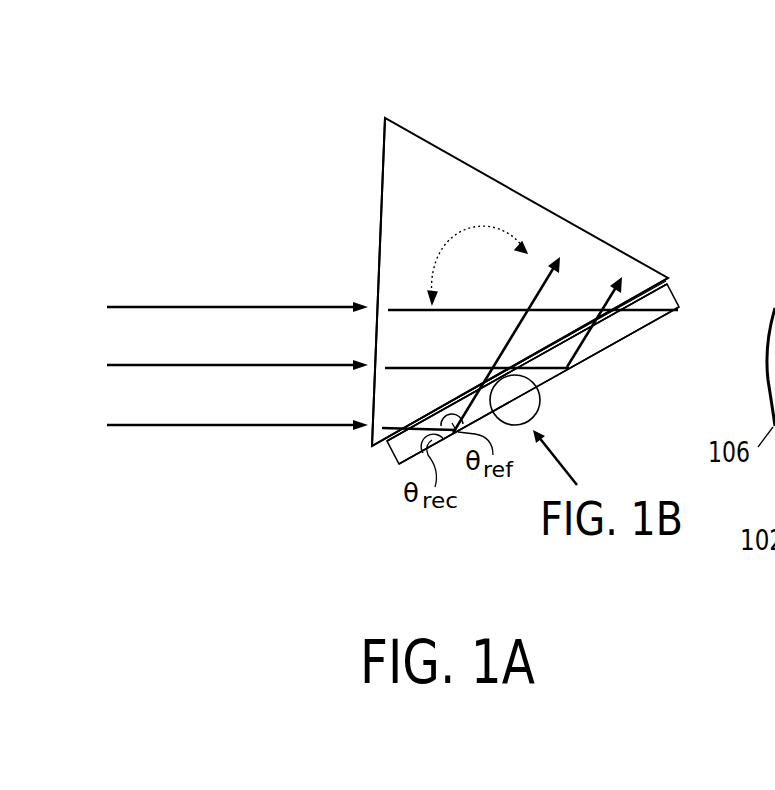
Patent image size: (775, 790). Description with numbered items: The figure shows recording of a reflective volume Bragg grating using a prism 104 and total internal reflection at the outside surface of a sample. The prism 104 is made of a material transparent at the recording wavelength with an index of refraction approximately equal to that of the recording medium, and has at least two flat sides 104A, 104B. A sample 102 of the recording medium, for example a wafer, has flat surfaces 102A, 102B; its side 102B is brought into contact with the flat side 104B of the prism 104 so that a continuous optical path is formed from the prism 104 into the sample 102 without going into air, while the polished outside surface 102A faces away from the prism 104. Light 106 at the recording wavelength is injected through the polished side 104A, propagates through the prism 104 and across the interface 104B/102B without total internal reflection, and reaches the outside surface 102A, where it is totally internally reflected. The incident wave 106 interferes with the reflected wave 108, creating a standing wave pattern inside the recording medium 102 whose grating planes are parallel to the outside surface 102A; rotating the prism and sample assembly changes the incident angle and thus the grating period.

The sample of recording medium 102 is at (680, 297).
The outside surface of sample 102A is at (670, 312).
The side of recording medium 102B is at (649, 277).
The prism 104 is at (523, 223).
The polished side of prism 104A is at (382, 186).
The flat side of prism 104B is at (376, 445).
The incident light 106 is at (228, 261).
The reflected wave 108 is at (586, 257).